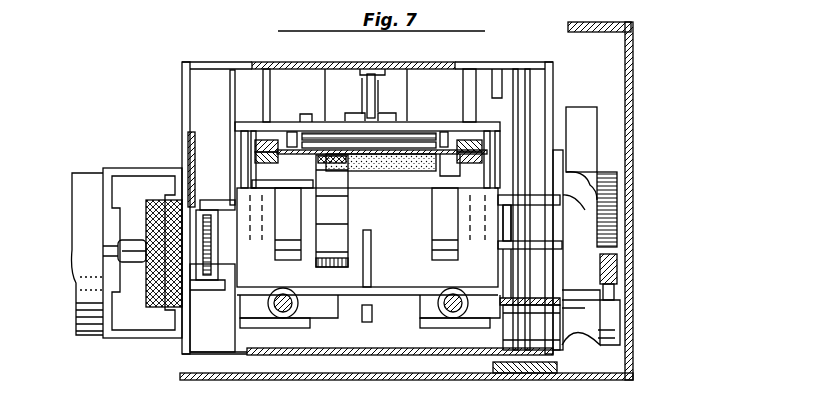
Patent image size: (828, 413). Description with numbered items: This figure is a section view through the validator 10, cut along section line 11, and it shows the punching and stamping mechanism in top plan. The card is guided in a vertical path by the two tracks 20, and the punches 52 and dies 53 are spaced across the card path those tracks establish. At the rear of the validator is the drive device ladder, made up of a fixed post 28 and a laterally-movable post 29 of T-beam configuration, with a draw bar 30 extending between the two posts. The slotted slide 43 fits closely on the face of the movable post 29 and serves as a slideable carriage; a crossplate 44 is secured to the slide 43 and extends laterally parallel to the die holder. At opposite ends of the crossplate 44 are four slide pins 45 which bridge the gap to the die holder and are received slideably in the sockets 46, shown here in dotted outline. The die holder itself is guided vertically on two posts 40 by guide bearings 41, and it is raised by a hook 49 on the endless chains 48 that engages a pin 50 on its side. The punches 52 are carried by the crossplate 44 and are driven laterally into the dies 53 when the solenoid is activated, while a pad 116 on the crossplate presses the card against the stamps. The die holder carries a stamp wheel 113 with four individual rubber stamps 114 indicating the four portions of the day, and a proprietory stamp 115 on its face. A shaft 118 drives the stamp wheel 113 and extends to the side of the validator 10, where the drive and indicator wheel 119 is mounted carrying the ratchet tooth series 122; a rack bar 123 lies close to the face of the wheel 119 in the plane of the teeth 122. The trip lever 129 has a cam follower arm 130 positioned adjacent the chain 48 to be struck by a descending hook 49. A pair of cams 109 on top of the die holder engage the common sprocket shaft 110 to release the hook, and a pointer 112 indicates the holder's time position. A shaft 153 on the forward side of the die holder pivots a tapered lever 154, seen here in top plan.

The validator 10 is at (632, 190).
The section line 11- 11 is at (315, 102).
The tracks 20 is at (255, 142).
The fixed post 28 is at (366, 82).
The laterally-movable post 29 is at (373, 110).
The draw bar 30 is at (367, 98).
The posts 40 is at (283, 318).
The guide bearings 41 is at (262, 321).
The slotted slide 43 is at (388, 110).
The crossplate 44 is at (416, 125).
The slide pins 45 is at (243, 164).
The sockets 46 is at (238, 296).
The endless chains 48 is at (507, 266).
The hook 49 is at (210, 200).
The pin 50 is at (182, 208).
The punches 52 is at (288, 138).
The dies 53 is at (286, 180).
The cams 109 is at (288, 233).
The shaft 110 is at (330, 212).
The pointer 112 is at (440, 323).
The stamp wheel 113 is at (330, 211).
The individual rubber stamps 114 is at (330, 238).
The proprietory stamp 115 is at (398, 162).
The pad 116 is at (324, 134).
The shaft 118 is at (513, 207).
The drive and indicator wheel 119 is at (577, 112).
The ratchet tooth series 122 is at (618, 218).
The rack bar 123 is at (618, 254).
The trip lever 129 is at (562, 200).
The cam follower arm 130 is at (544, 306).
The shaft 153 is at (373, 322).
The tapered lever 154 is at (372, 270).